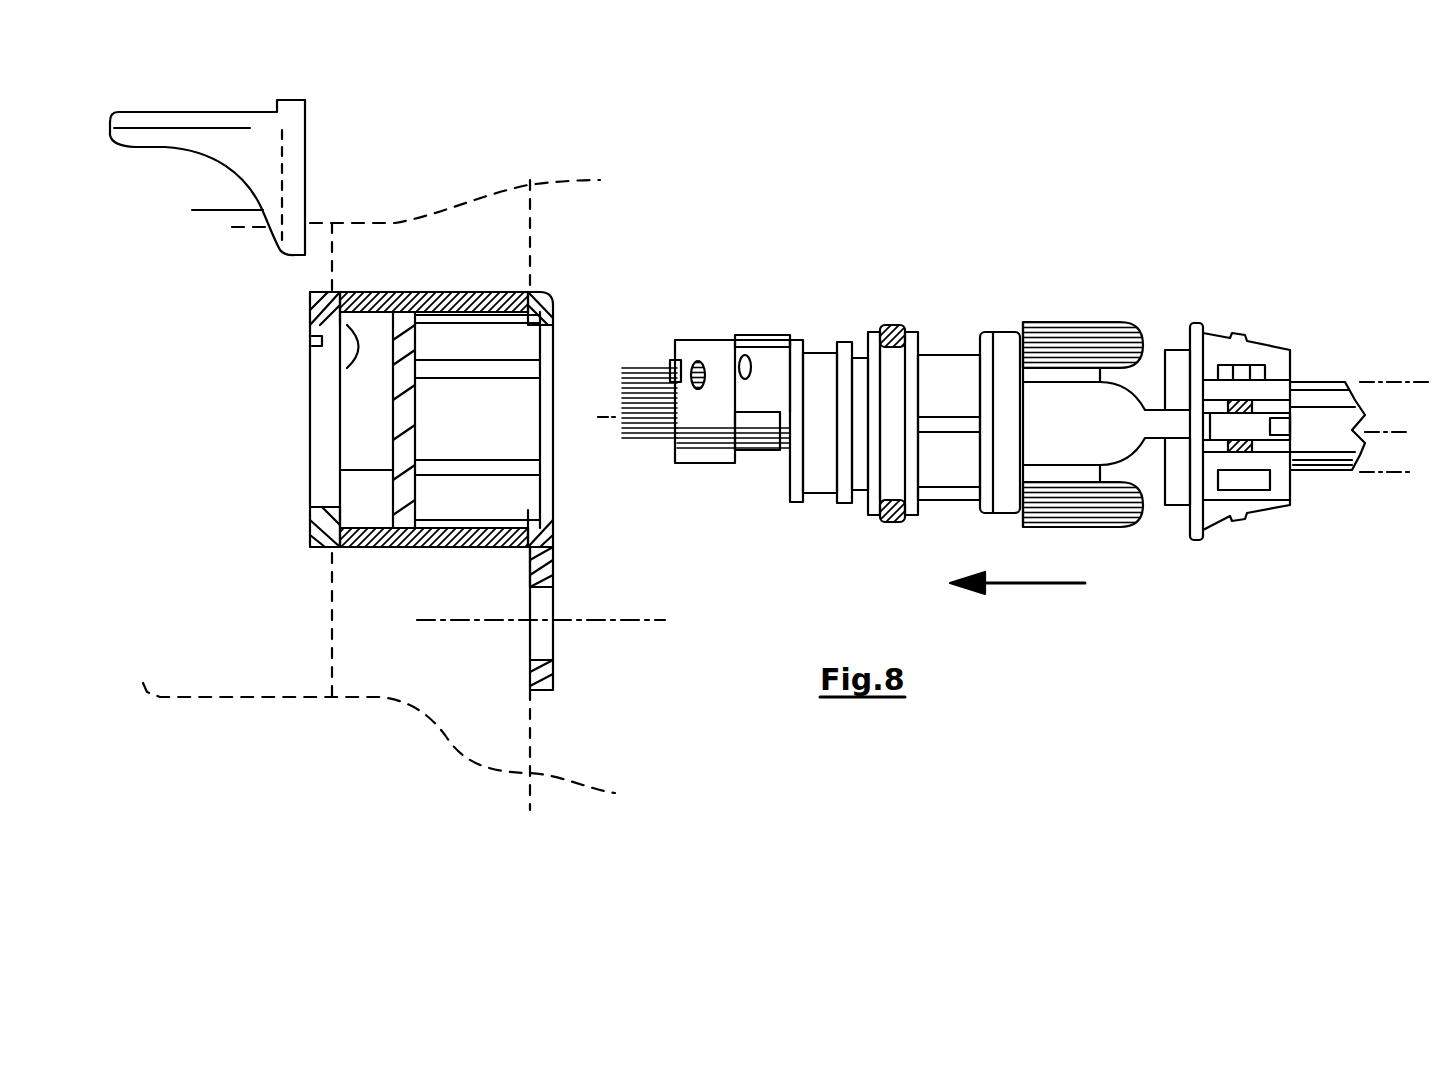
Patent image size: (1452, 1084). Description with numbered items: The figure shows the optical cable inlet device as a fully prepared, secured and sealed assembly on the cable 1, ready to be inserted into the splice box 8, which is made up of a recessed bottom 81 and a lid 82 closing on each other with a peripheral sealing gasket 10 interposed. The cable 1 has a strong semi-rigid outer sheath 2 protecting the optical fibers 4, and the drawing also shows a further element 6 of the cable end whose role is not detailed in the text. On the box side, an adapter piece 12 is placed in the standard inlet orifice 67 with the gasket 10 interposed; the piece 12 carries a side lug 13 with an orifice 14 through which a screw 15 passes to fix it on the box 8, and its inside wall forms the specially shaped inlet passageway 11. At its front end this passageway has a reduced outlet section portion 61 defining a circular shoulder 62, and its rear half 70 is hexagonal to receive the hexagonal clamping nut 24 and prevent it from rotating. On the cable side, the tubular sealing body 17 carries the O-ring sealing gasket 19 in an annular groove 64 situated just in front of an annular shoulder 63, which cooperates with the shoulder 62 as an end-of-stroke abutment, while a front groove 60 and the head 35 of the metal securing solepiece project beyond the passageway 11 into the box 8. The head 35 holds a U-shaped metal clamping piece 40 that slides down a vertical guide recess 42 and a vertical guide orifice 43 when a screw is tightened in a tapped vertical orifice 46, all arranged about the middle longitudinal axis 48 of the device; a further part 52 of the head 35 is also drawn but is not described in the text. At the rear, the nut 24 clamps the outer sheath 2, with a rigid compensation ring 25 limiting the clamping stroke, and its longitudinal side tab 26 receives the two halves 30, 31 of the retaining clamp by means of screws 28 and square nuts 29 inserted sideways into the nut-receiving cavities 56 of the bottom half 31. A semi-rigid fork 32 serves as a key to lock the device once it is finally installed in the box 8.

The optical cable 1 is at (1333, 473).
The outer sheath 2 is at (1440, 268).
The optical fibers 4 is at (645, 415).
The contact carrier 6 is at (763, 447).
The splice box 8 is at (403, 733).
The peripheral sealing gasket 10 is at (468, 292).
The inlet passageway 11 is at (368, 498).
The adapter piece 12 is at (313, 553).
The side lug 13 is at (552, 680).
The orifice 14 is at (548, 647).
The screw 15 is at (592, 622).
The tubular sealing body 17 is at (952, 367).
The O-ring sealing gasket 19 is at (893, 323).
The clamping nut 24 is at (1070, 393).
The compensation ring 25 is at (1003, 500).
The longitudinal side tab 26 is at (1193, 423).
The screw 28 is at (1247, 363).
The nut 29 is at (1253, 480).
The clamp half 30 is at (1217, 350).
The clamp half 31 is at (1223, 510).
The semi-rigid fork 32 is at (163, 143).
The head 35 is at (700, 313).
The U-shaped metal clamping piece 40 is at (707, 443).
The vertical guide recess 42 is at (672, 363).
The vertical guide orifice 43 is at (753, 360).
The tapped vertical orifice 46 is at (697, 358).
The middle longitudinal axis 48 is at (1393, 383).
The clamp plate 52 is at (748, 335).
The nut-receiving cavity 56 is at (1275, 465).
The front groove 60 is at (815, 502).
The reduced outlet section portion 61 is at (307, 350).
The circular shoulder 62 is at (357, 368).
The annular shoulder 63 is at (877, 517).
The annular groove 64 is at (895, 455).
The standard inlet orifice 67 is at (430, 547).
The hexagonal inlet 70 is at (523, 492).
The recessed bottom 81 is at (410, 751).
The lid 82 is at (440, 491).